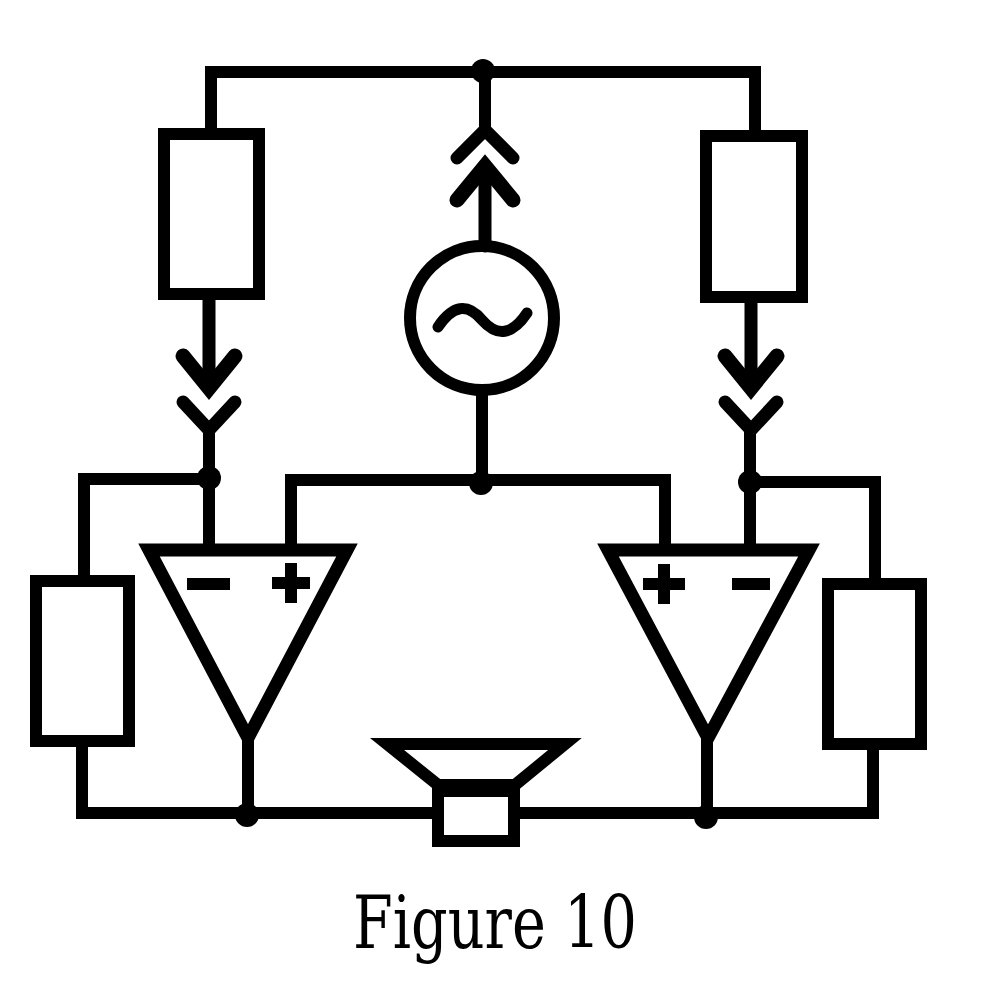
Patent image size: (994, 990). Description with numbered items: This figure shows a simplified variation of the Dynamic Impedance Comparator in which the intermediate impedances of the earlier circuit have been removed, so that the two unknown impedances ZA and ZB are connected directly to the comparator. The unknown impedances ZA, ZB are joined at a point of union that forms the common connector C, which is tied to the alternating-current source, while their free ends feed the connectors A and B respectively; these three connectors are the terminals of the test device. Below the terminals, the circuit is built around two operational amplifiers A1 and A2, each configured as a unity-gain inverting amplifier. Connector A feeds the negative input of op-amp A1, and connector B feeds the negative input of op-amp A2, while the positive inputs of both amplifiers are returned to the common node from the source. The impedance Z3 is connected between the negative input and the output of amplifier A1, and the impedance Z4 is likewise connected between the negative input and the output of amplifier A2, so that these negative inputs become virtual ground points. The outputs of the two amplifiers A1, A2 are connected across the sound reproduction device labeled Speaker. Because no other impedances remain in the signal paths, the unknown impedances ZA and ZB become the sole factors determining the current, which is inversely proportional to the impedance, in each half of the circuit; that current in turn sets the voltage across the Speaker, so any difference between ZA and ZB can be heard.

The unknown impedance ZA is at (155, 214).
The unknown impedance ZB is at (812, 216).
The impedance Z3 is at (133, 696).
The impedance Z4 is at (840, 700).
The connector A is at (170, 366).
The connector B is at (786, 369).
The common connector C is at (449, 184).
The operational amplifier A1 is at (248, 644).
The operational amplifier A2 is at (708, 644).
The sound reproduction device Speaker is at (478, 740).